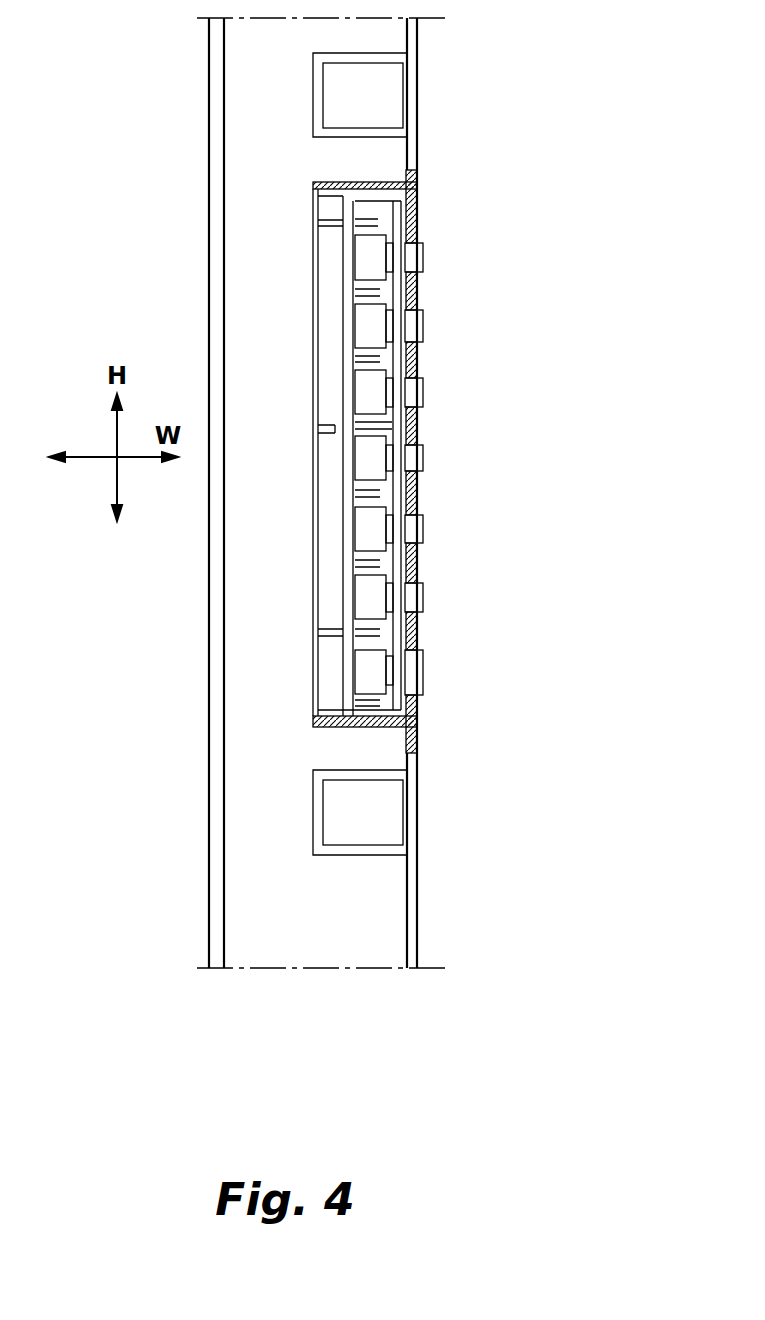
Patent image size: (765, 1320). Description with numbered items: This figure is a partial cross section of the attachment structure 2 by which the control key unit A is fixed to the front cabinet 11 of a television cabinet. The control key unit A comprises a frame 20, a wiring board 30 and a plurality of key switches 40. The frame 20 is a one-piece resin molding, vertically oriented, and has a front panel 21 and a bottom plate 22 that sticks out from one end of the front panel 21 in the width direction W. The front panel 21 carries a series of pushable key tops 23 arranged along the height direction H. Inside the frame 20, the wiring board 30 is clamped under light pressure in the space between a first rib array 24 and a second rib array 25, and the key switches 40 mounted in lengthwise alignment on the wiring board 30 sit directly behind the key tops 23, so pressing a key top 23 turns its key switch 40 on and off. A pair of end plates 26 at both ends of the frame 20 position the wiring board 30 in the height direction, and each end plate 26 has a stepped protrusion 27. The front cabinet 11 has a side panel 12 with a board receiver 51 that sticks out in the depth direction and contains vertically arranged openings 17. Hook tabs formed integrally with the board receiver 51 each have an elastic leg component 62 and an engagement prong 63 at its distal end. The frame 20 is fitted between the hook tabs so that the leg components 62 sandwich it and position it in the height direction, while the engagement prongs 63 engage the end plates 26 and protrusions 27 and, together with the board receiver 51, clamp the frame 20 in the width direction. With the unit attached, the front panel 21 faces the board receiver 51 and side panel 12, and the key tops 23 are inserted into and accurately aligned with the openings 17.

The attachment structure 2 is at (474, 948).
The front cabinet 11 is at (209, 878).
The side panel 12 is at (418, 101).
The openings 17 is at (416, 470).
The frame 20 is at (305, 687).
The front panel 21 is at (418, 298).
The bottom plate 22 is at (312, 342).
The key tops 23 is at (424, 330).
The first rib array 24 is at (395, 268).
The second rib array 25 is at (330, 230).
The end plates 26 is at (365, 192).
The protrusion 27 is at (313, 192).
The wiring board 30 is at (342, 567).
The key switches 40 is at (363, 320).
The board receiver 51 is at (418, 207).
The leg component 62 is at (393, 158).
The engagement prong 63 is at (342, 200).
The control key unit A is at (290, 613).